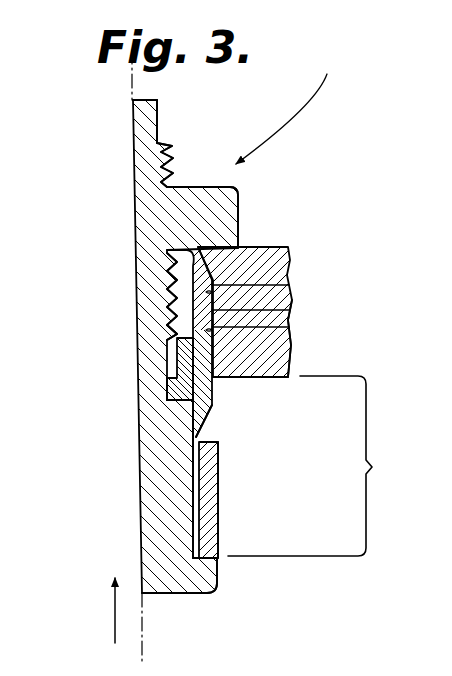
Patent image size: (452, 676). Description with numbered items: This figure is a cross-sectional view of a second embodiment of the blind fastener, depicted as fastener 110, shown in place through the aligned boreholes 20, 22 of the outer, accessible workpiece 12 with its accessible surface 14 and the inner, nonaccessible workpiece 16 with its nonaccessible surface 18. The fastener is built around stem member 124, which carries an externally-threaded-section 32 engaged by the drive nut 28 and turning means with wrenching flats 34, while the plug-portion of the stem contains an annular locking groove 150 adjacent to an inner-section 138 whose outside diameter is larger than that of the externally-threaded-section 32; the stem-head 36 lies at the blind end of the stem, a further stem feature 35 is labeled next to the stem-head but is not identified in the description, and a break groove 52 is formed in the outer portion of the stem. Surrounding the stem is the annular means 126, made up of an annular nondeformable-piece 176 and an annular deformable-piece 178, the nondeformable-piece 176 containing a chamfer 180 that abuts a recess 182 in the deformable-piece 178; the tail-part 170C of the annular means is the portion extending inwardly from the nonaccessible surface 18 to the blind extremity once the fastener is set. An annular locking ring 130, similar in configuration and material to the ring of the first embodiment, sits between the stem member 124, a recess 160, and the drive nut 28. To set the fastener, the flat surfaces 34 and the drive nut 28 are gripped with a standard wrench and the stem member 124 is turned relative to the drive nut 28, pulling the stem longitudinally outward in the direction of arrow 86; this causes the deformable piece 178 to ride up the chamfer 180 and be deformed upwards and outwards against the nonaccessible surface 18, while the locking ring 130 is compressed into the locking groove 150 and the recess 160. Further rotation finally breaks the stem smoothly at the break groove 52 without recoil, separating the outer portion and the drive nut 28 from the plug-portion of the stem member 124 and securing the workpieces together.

The outer and accessible workpiece 12 is at (270, 262).
The accessible surface 14 is at (250, 256).
The inner or nonaccessible workpiece 16 is at (283, 355).
The nonaccessible surface 18 is at (289, 378).
The borehole 20 is at (288, 284).
The borehole 22 is at (288, 328).
The drive nut 28 is at (240, 208).
The externally-threaded-section 32 is at (172, 168).
The turning means with wrenching flats 34 is at (157, 108).
The body top end 35 is at (143, 113).
The stem-head 36 is at (168, 583).
The break groove 52 is at (173, 358).
The arrow 86 is at (111, 618).
The fastener 110 is at (295, 108).
The stem member 124 is at (148, 202).
The annular means 126 is at (212, 424).
The annular locking ring 130 is at (167, 392).
The inner-section 138 is at (215, 591).
The annular locking groove 150 is at (178, 402).
The recess 160 is at (180, 256).
The tail-part 170C is at (336, 466).
The annular nondeformable-piece 176 is at (170, 327).
The annular deformable-piece 178 is at (200, 508).
The chamfer 180 is at (214, 405).
The recess 182 is at (218, 486).